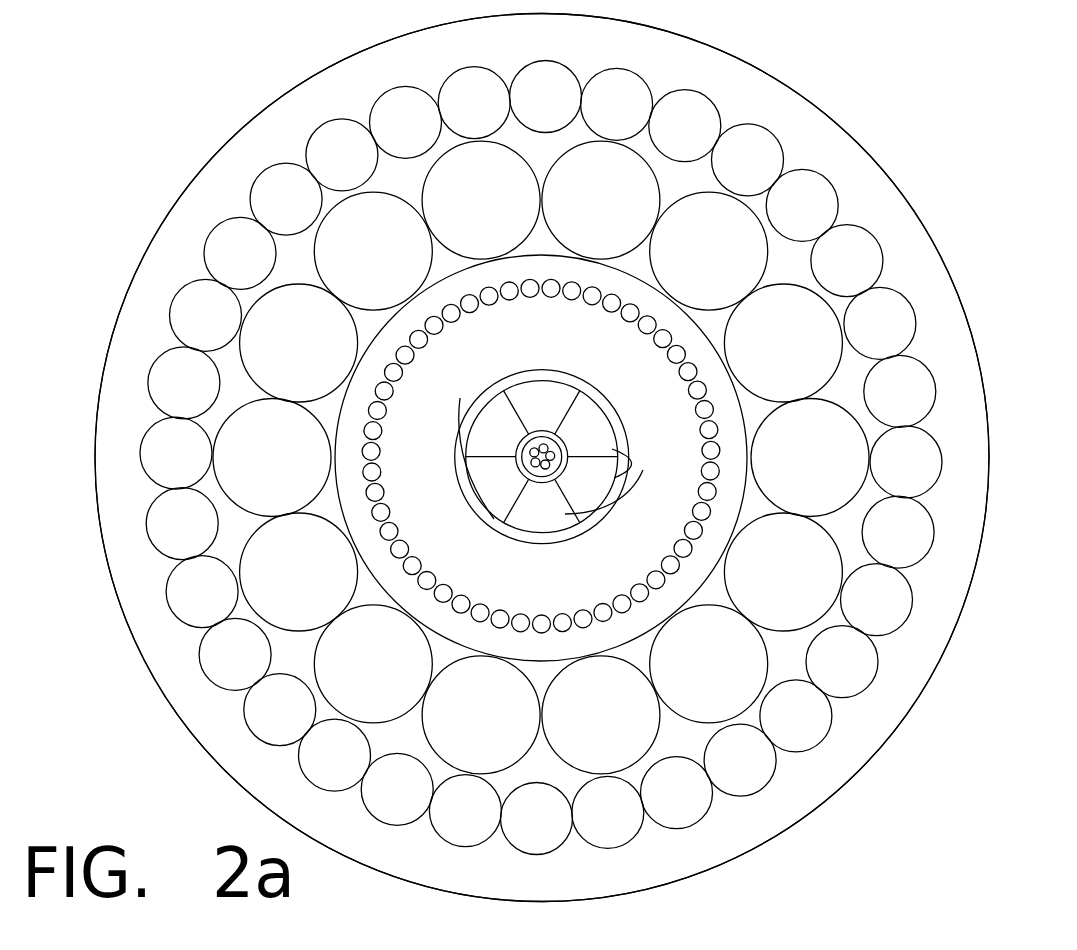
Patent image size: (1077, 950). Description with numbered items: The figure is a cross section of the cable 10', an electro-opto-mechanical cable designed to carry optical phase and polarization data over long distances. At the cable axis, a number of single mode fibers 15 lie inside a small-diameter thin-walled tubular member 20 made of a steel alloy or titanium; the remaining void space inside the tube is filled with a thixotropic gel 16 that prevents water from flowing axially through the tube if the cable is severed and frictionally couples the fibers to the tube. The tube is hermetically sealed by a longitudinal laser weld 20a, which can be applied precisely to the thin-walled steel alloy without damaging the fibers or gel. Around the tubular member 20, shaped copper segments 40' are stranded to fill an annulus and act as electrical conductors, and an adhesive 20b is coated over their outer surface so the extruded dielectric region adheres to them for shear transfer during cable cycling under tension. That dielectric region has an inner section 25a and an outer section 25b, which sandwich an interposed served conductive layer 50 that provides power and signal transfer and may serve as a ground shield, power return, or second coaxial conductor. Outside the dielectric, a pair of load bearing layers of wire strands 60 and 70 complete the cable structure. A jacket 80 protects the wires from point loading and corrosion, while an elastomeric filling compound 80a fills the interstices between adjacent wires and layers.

The cable 10' is at (518, 458).
The single mode fibers 15 is at (540, 473).
The thixotropic gel 16 is at (527, 463).
The thin-walled tubular member 20 is at (542, 431).
The laser weld 20a is at (590, 440).
The adhesive 20b is at (622, 437).
The inner section 25a is at (648, 557).
The outer section 25b is at (639, 629).
The shaped copper segments 40' is at (560, 443).
The served conductive layer 50 is at (512, 303).
The load bearing layer of wire strands 60 is at (807, 301).
The load bearing layer of wire strands 70 is at (757, 147).
The jacket 80 is at (975, 466).
The elastomeric filling compound 80a is at (853, 377).